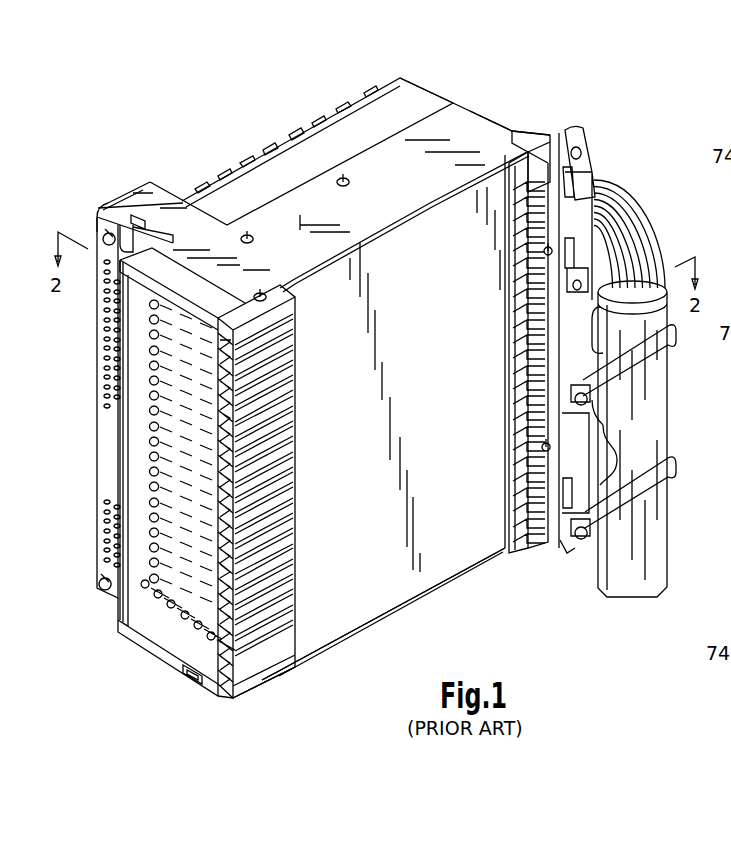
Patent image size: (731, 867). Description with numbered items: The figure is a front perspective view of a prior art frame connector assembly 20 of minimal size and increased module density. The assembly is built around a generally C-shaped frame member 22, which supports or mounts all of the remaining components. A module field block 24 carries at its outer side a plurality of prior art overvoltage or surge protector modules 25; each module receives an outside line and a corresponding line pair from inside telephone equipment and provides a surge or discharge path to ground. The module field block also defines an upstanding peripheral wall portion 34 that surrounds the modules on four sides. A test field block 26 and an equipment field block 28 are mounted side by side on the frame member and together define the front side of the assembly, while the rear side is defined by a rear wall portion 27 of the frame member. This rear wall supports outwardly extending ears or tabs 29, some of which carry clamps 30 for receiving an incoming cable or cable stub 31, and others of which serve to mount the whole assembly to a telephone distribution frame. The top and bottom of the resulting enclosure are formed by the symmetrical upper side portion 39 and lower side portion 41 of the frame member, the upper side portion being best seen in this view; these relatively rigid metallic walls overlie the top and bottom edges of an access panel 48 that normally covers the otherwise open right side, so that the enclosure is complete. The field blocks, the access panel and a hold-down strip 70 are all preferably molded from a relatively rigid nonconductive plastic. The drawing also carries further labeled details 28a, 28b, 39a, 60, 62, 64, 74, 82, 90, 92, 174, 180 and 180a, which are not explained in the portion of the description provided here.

The connector assembly 20 is at (498, 72).
The C-shaped frame member 22 is at (491, 112).
The module field block 24 is at (441, 82).
The surge protector modules 25 is at (262, 158).
The test field block 26 is at (92, 416).
The rear wall portion 27 is at (496, 124).
The equipment field block 28 is at (151, 674).
The frame slot 28a is at (117, 613).
The lower frame block 28b is at (242, 688).
The ears or tabs 29 is at (580, 147).
The clamps 30 is at (675, 457).
The cable stub 31 is at (653, 533).
The upstanding peripheral wall portion 34 is at (394, 104).
The upper side portion 39 is at (363, 232).
The end block 39a is at (141, 203).
The lower side portion 41 is at (382, 610).
The access panel 48 is at (425, 443).
The terminal pins 60 is at (140, 585).
The apertures 62 is at (84, 316).
The key block 64 is at (549, 135).
The hold-down strip 70 is at (617, 192).
The rear connector 74 is at (511, 577).
The screws 82 is at (550, 250).
The front connector 90 is at (293, 340).
The frame corner 92 is at (216, 706).
The hole 174 is at (258, 288).
The screw 180 is at (102, 229).
The screw 180a is at (100, 580).